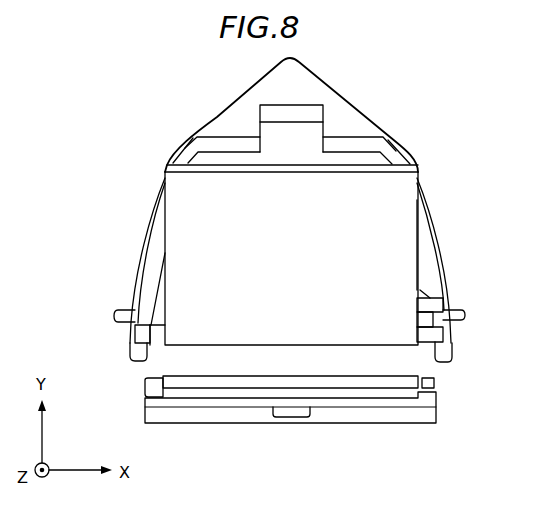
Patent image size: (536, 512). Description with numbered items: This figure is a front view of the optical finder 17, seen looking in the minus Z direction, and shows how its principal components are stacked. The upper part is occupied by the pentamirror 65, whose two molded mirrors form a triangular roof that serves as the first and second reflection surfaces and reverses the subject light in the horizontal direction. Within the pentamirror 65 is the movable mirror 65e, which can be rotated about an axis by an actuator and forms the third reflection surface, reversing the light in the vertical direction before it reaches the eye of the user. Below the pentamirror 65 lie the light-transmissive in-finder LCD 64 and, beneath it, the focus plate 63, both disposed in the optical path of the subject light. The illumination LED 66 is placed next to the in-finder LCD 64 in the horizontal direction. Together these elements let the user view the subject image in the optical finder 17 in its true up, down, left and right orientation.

The optical finder 17 is at (108, 147).
The pentamirror 65 is at (212, 102).
The movable mirror 65e is at (402, 208).
The in-finder LCD 64 is at (162, 377).
The illumination LED 66 is at (435, 383).
The focus plate 63 is at (355, 417).